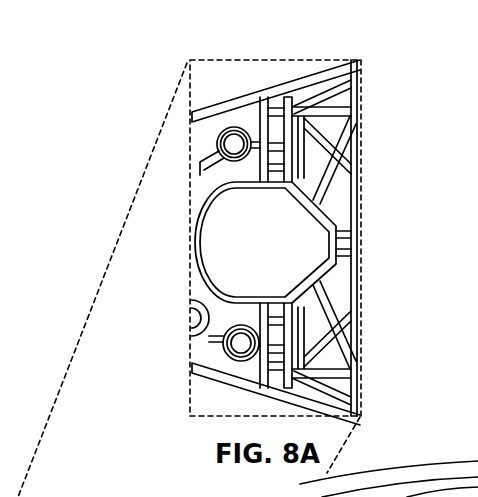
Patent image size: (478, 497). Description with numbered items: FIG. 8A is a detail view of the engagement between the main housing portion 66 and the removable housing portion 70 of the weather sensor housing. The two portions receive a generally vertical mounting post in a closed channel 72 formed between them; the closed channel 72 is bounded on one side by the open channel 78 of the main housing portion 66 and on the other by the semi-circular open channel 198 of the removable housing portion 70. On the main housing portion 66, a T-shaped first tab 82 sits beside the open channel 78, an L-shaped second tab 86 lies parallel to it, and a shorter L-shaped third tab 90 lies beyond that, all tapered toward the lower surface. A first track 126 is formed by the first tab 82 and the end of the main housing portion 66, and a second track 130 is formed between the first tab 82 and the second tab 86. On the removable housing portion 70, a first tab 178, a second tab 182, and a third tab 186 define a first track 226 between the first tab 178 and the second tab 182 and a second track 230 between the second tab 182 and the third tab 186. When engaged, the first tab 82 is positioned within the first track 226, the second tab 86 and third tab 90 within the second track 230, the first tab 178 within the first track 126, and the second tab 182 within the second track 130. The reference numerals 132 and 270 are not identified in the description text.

The removable housing portion 70 is at (198, 133).
The first tab 178 is at (203, 170).
The second tab 182 is at (268, 146).
The third tab 186 is at (283, 100).
The closed channel 72 is at (280, 252).
The open channel 198 is at (199, 201).
The third tab 90 is at (288, 112).
The second tab 86 is at (296, 118).
The first tab 82 is at (292, 162).
The main housing portion 66 is at (347, 184).
The open channel 78 is at (325, 226).
The first track 126 is at (300, 320).
The second track 130 is at (298, 336).
The lower horizontal beam 132 is at (285, 372).
The first track 226 is at (268, 320).
The second track 230 is at (273, 362).
The vehicle body line 270 is at (257, 479).